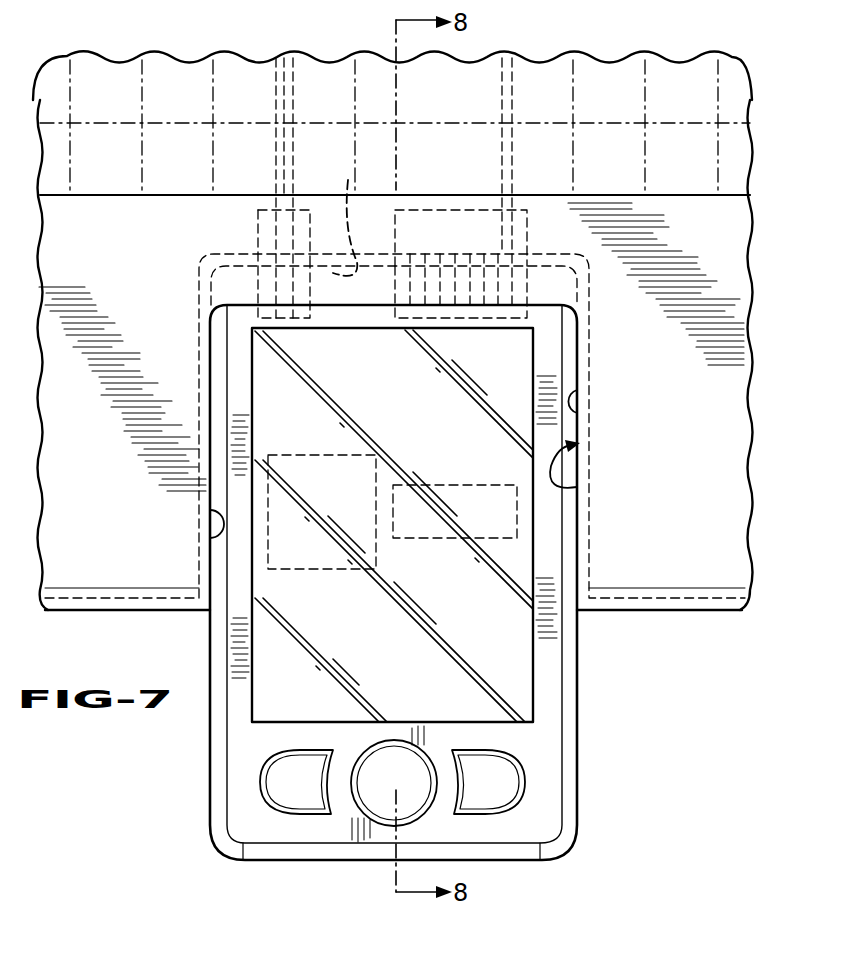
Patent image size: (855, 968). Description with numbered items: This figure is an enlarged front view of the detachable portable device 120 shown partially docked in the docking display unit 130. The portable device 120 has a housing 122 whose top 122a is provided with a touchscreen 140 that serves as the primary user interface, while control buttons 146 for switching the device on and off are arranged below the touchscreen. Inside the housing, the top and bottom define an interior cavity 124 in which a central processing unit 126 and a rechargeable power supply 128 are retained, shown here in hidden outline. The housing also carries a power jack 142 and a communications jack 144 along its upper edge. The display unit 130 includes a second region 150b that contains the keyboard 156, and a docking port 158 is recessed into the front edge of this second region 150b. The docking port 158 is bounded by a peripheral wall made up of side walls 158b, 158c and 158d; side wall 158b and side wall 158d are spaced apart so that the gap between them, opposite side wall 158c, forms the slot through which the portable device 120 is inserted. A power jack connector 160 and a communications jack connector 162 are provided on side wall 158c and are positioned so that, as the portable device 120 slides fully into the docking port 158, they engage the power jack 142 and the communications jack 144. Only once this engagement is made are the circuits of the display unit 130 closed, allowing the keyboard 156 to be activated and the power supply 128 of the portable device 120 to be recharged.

The detachable portable device 120 is at (587, 866).
The housing 122 is at (588, 788).
The top of housing 122a is at (548, 757).
The interior cavity 124 is at (487, 598).
The central processing unit 126 is at (288, 542).
The rechargeable power supply 128 is at (503, 522).
The docking display unit 130 is at (706, 626).
The touchscreen 140 is at (416, 669).
The power jack 142 is at (268, 292).
The communications jack 144 is at (520, 292).
The control buttons 146 is at (372, 794).
The second region 150b is at (702, 464).
The keyboard 156 is at (612, 72).
The docking port 158 is at (577, 487).
The side wall 158b is at (210, 536).
The side wall 158c is at (349, 214).
The side wall 158d is at (577, 410).
The power jack connector 160 is at (270, 230).
The communications jack connector 162 is at (462, 230).